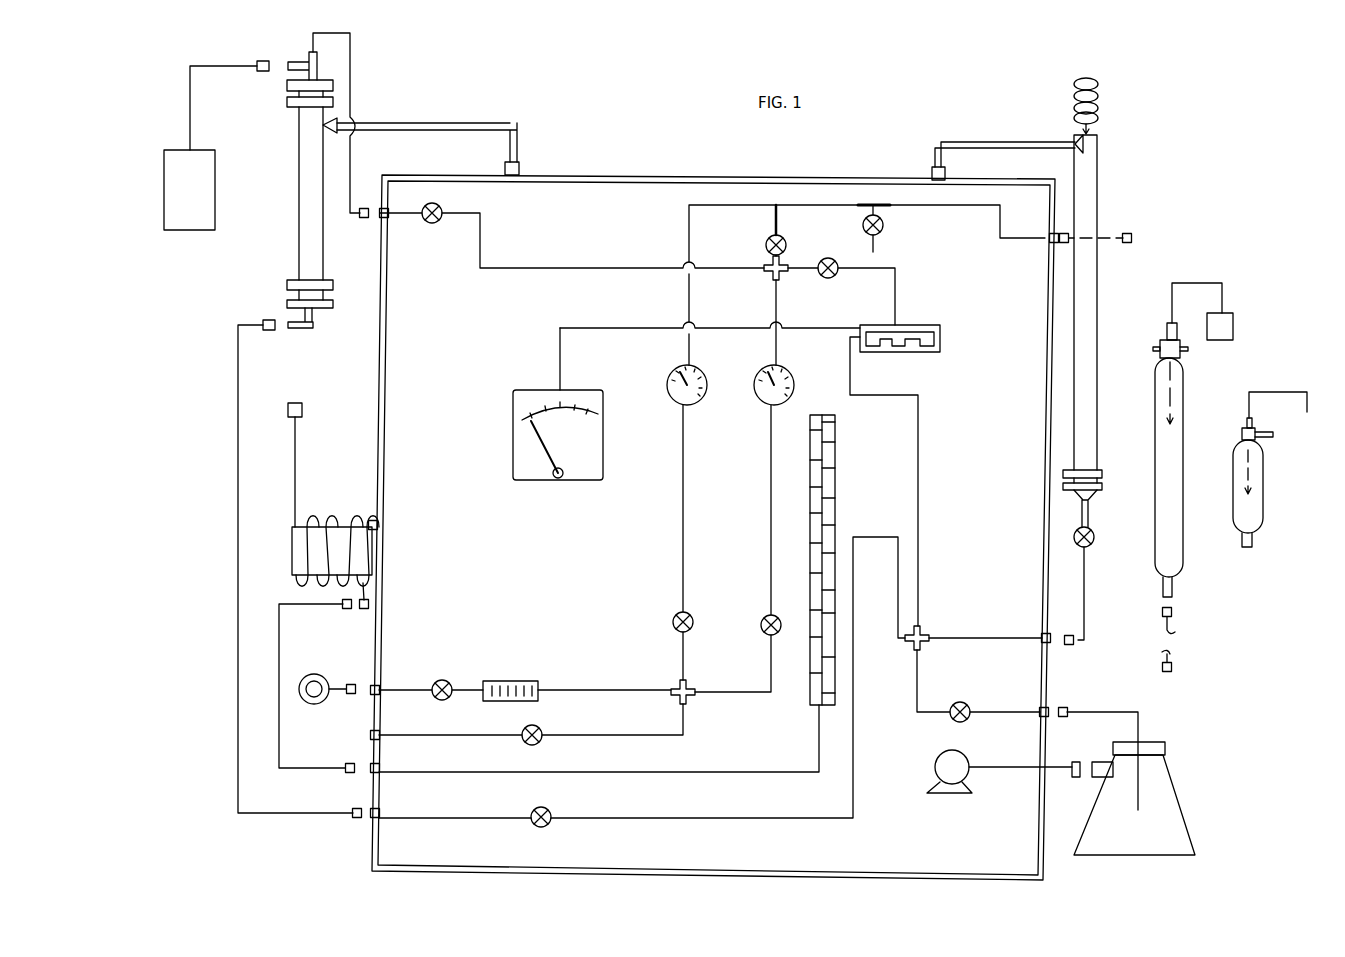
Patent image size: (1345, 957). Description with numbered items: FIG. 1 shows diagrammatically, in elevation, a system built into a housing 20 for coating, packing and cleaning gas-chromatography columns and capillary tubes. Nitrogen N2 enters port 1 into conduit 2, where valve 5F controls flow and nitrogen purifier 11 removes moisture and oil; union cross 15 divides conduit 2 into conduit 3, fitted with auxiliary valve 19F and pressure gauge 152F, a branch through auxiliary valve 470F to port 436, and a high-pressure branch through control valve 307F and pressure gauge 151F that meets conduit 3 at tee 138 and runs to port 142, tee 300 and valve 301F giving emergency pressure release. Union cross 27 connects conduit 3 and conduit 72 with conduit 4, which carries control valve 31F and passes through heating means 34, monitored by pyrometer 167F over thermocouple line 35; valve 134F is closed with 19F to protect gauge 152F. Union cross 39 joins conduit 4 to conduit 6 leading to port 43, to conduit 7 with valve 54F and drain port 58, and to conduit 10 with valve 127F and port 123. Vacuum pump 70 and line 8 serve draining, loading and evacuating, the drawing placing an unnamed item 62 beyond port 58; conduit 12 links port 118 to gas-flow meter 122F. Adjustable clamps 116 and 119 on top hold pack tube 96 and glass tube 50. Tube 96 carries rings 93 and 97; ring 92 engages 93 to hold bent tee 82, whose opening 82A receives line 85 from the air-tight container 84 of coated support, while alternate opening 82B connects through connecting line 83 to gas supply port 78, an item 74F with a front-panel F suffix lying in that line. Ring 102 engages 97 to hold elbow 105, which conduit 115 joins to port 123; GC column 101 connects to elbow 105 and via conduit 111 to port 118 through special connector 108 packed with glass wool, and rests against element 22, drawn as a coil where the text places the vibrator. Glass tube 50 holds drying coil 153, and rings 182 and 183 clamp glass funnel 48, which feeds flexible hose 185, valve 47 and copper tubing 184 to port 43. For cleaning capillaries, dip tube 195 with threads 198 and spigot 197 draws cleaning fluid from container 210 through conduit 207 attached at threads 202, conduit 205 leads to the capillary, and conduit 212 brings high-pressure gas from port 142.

The port 1 is at (380, 686).
The conduit 2 is at (406, 688).
The conduit 3 is at (703, 691).
The conduit 4 is at (790, 268).
The valve 5F is at (449, 696).
The conduit 6 is at (972, 637).
The conduit 7 is at (930, 710).
The line 8 is at (1018, 770).
The conduit 10 is at (768, 822).
The nitrogen purifier 11 is at (538, 683).
The conduit 12 is at (756, 776).
The union cross 15 is at (695, 704).
The auxiliary valve 19F is at (763, 632).
The housing 20 is at (718, 176).
The heating coil 22 is at (292, 548).
The union cross 27 is at (782, 280).
The control valve 31F is at (836, 278).
The heating means 34 is at (940, 340).
The thermocouple line 35 is at (558, 368).
The union cross 39 is at (926, 628).
The port 43 is at (1042, 635).
The valve 47 is at (1092, 543).
The glass funnel 48 is at (1090, 503).
The glass tube 50 is at (1098, 350).
The valve 54F is at (966, 704).
The port 58 is at (1036, 716).
The flask 62 is at (1170, 800).
The vacuum pump 70 is at (935, 764).
The conduit 72 is at (480, 255).
The valve 74F is at (440, 208).
The gas supply port 78 is at (390, 210).
The bent tee 82 is at (318, 62).
The tee opening 82A is at (288, 67).
The alternate opening 82B is at (312, 40).
The connecting line 83 is at (350, 150).
The air-tight container 84 is at (208, 196).
The line 85 is at (190, 118).
The male-threaded knurled aluminum ring 92 is at (338, 86).
The female-threaded knurled aluminum ring 93 is at (338, 103).
The pack tube 96 is at (300, 218).
The female-threaded knurled aluminum ring 97 is at (287, 284).
The GC column 101 is at (296, 465).
The male threaded aluminum ring 102 is at (287, 304).
The elbow 105 is at (312, 326).
The special connector 108 is at (268, 331).
The conduit 111 is at (279, 642).
The conduit 115 is at (238, 455).
The adjustable clamp 116 is at (518, 140).
The port 118 is at (379, 770).
The adjustable clamp 119 is at (934, 150).
The gas-flow meter 122F is at (835, 486).
The port 123 is at (378, 818).
The valve 127F is at (550, 810).
The valve 134F is at (786, 250).
The tee 138 is at (776, 208).
The port 142 is at (1050, 244).
The pressure gauge 151F is at (712, 358).
The pressure gauge 152F is at (788, 372).
The coil 153 is at (1098, 94).
The pyrometer 167F is at (568, 482).
The female-threaded knurled aluminum ring 182 is at (1102, 474).
The male threaded knurled aluminum ring 183 is at (1102, 488).
The copper tubing 184 is at (1085, 612).
The flexible hose 185 is at (1089, 520).
The dip tube 195 is at (1176, 418).
The spigot 197 is at (1186, 350).
The threads 198 is at (1160, 352).
The threads 202 is at (1168, 320).
The conduit 205 is at (1173, 588).
The conduit 207 is at (1184, 284).
The container 210 is at (1232, 336).
The conduit 212 is at (1108, 234).
The tee 300 is at (876, 205).
The valve 301F is at (882, 236).
The control valve 307F is at (690, 617).
The port 436 is at (371, 735).
The auxiliary valve 470F is at (541, 729).
The nitrogen N2 is at (312, 676).